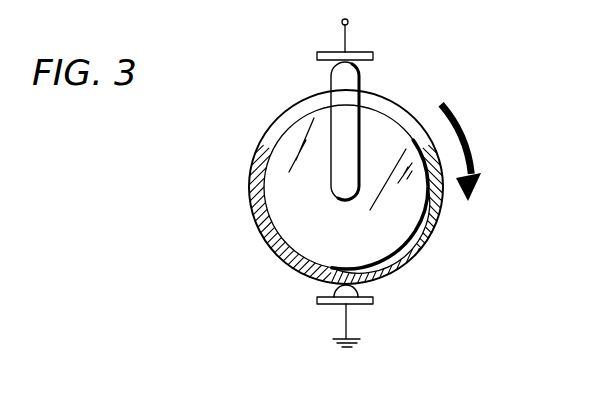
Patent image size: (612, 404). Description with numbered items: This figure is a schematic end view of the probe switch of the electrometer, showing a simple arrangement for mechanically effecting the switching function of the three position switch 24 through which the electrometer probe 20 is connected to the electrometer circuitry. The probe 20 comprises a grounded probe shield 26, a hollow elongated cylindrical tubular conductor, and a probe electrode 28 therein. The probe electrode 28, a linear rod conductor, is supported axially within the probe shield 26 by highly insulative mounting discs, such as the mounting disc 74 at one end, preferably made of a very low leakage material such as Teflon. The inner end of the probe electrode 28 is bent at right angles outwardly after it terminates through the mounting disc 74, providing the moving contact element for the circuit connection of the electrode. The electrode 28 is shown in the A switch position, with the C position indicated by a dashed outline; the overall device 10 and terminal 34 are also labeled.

The electrical device 10 is at (511, 94).
The electrometer probe 20 is at (243, 160).
The three position switch 24 is at (317, 56).
The probe shield 26 is at (252, 198).
The probe electrode 28 is at (331, 189).
The terminal 34 is at (341, 22).
The mounting disc 74 is at (407, 218).